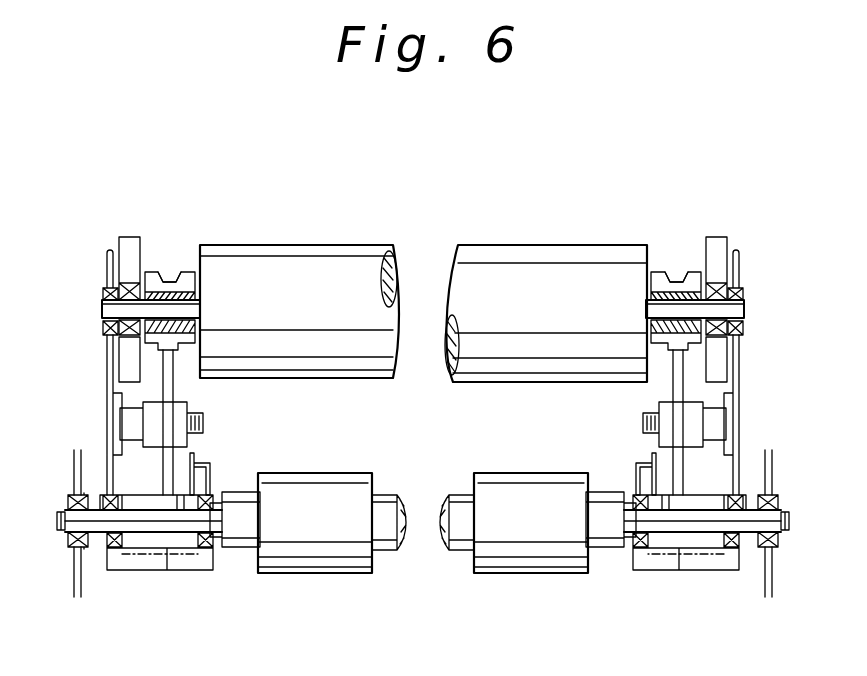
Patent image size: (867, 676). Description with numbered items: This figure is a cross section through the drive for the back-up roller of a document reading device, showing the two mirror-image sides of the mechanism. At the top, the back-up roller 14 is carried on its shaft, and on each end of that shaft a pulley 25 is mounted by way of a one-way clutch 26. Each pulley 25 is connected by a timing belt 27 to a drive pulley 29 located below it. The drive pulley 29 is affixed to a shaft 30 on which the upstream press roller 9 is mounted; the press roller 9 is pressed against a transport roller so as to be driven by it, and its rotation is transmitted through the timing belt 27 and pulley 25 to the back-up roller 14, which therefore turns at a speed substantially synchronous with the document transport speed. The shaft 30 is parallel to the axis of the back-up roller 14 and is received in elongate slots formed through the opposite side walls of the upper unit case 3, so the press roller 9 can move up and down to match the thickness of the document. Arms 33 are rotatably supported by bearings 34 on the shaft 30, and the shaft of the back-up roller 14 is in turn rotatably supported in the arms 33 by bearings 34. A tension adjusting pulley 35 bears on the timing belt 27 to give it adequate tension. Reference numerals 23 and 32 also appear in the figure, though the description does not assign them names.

The upper unit case 3 is at (83, 580).
The press roller 9 is at (333, 573).
The back-up roller 14 is at (366, 244).
The support rod 23 is at (130, 237).
The pulley 25 is at (186, 272).
The one-way clutch 26 is at (168, 282).
The timing belt 27 is at (173, 382).
The drive pulley 29 is at (167, 570).
The shaft 30 is at (60, 533).
The bearing 32 is at (67, 500).
The arm 33 is at (105, 374).
The bearing 34 is at (105, 293).
The tension adjusting pulley 35 is at (188, 444).